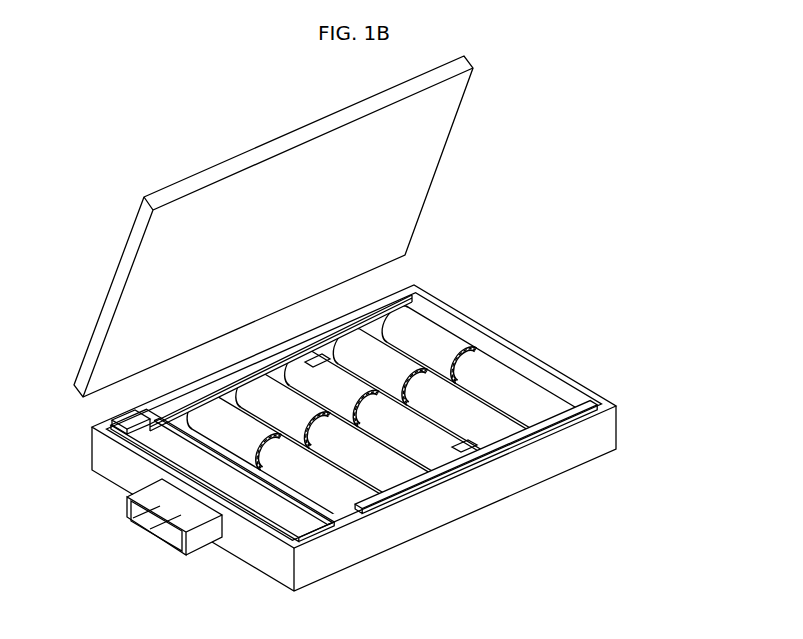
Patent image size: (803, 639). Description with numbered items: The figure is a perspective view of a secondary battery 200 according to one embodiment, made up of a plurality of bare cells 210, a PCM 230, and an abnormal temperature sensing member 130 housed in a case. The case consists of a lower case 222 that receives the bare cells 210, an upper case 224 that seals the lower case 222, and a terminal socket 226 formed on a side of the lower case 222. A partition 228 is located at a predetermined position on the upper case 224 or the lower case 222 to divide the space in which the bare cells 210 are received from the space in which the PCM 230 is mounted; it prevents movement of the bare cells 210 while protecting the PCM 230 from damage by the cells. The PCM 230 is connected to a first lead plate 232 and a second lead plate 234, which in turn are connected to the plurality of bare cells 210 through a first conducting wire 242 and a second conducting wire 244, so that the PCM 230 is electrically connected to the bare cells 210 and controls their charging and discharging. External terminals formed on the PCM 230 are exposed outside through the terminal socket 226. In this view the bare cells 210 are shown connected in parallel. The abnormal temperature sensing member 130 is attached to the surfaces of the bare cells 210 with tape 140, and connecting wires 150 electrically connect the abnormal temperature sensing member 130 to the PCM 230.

The secondary battery 200 is at (136, 120).
The upper case 224 is at (423, 166).
The lower case 222 is at (397, 438).
The second lead plate 234 is at (595, 393).
The first lead plate 232 is at (423, 293).
The tape 140 is at (476, 346).
The abnormal temperature sensing member 130 is at (488, 330).
The bare cells 210 is at (402, 411).
The first conducting wire 242 is at (147, 430).
The PCM 230 is at (160, 443).
The connecting wires 150 is at (145, 512).
The terminal socket 226 is at (142, 541).
The partition 228 is at (293, 495).
The second conducting wire 244 is at (395, 477).